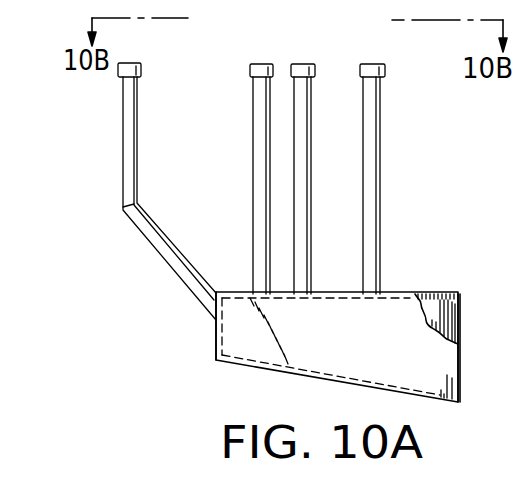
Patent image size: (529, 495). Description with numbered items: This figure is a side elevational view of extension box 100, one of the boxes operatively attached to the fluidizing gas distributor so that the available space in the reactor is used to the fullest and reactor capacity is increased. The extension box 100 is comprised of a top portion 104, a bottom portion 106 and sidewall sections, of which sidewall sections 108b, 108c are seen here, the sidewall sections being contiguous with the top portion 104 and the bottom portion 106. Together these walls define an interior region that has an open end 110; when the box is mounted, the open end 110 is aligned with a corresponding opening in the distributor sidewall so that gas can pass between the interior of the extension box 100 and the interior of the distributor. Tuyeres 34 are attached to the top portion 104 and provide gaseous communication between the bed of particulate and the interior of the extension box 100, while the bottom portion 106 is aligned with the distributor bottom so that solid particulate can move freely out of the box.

The tuyeres 34 is at (131, 105).
The extension box 100 is at (176, 313).
The top portion 104 is at (413, 293).
The bottom portion 106 is at (262, 371).
The sidewall section 108b is at (214, 330).
The sidewall section 108c is at (362, 350).
The open end 110 is at (456, 322).